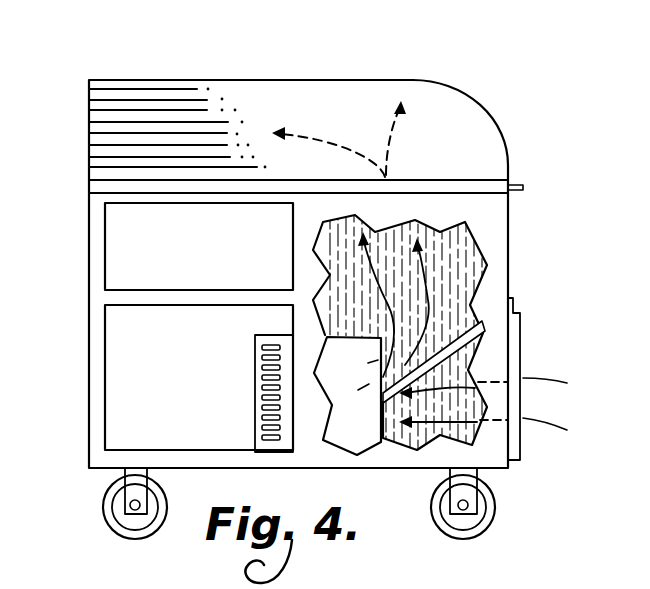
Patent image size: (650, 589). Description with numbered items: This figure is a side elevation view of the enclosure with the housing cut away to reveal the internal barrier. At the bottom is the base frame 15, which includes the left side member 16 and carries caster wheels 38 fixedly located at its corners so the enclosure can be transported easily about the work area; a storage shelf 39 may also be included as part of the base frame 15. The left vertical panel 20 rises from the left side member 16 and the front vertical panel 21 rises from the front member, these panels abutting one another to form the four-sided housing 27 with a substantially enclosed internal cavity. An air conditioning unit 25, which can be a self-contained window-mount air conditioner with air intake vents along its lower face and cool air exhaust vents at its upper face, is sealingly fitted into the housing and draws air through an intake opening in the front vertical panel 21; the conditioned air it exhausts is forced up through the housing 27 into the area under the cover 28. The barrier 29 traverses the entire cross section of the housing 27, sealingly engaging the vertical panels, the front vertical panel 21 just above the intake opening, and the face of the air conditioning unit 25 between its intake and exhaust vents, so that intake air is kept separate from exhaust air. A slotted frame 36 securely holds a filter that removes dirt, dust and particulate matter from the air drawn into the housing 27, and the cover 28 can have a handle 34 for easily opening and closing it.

The base frame 15 is at (319, 295).
The left side member 16 is at (184, 457).
The left vertical panel 20 is at (437, 458).
The front vertical panel 21 is at (510, 230).
The air conditioning unit 25 is at (257, 441).
The housing 27 is at (530, 266).
The cover 28 is at (410, 88).
The barrier 29 is at (513, 346).
The handle 34 is at (523, 188).
The slotted frame 36 is at (522, 455).
The caster wheels 38 is at (118, 527).
The storage shelf 39 is at (122, 297).